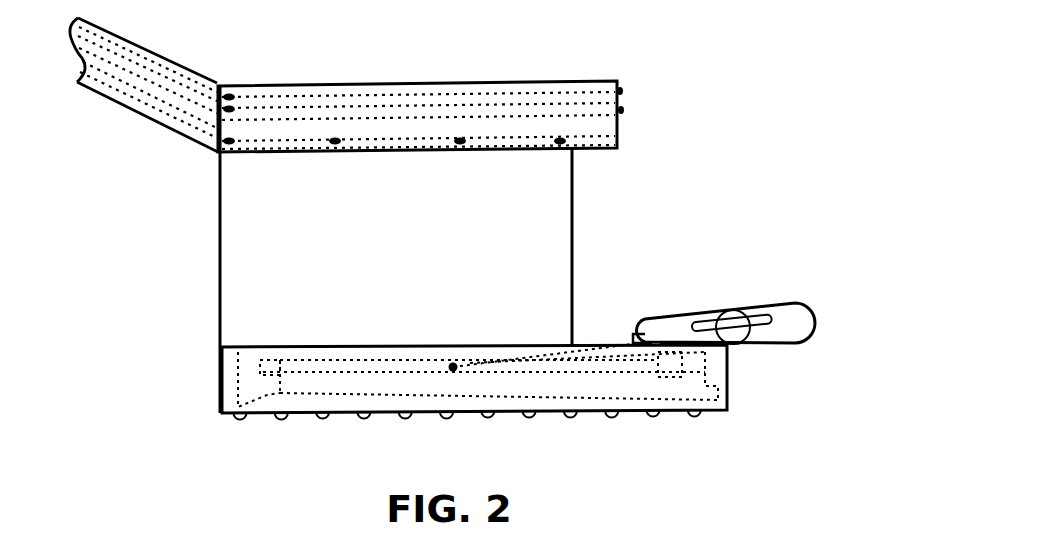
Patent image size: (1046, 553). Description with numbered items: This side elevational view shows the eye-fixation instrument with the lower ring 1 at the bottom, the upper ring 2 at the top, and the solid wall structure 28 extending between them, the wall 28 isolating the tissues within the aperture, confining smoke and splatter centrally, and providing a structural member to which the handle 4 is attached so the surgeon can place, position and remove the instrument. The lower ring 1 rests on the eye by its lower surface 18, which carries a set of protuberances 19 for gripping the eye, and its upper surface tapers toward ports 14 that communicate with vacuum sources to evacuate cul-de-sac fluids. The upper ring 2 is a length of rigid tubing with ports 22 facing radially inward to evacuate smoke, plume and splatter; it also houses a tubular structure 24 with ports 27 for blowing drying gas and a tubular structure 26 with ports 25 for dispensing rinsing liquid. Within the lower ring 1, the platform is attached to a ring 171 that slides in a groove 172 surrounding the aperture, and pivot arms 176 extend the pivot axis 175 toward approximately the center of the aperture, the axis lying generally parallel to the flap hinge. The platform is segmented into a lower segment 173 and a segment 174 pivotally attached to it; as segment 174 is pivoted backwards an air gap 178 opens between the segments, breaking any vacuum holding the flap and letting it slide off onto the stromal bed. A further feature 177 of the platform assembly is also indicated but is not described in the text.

The lower ring 1 is at (730, 395).
The upper ring 2 is at (618, 138).
The handle 4 is at (178, 63).
The ports 14 is at (230, 370).
The lower surface 18 is at (262, 400).
The protuberances 19 is at (365, 417).
The ports 22 is at (352, 153).
The tubular structure 24 is at (427, 112).
The ports 25 is at (620, 90).
The tubular structure 26 is at (360, 93).
The ports 27 is at (622, 110).
The wall structure 28 is at (490, 213).
The ring 171 is at (315, 365).
The groove 172 is at (260, 360).
The segment 173 is at (670, 313).
The segment 174 is at (773, 305).
The pivot axis 175 is at (453, 367).
The pivot arms 176 is at (563, 352).
The tongue underside 177 is at (737, 343).
The air gap 178 is at (730, 310).